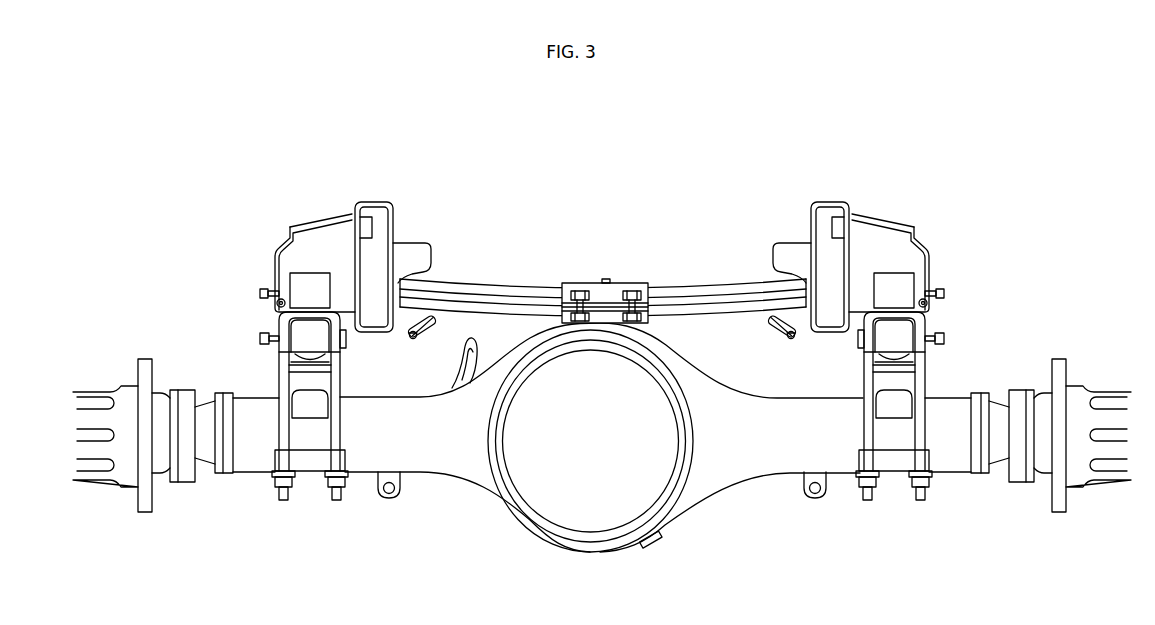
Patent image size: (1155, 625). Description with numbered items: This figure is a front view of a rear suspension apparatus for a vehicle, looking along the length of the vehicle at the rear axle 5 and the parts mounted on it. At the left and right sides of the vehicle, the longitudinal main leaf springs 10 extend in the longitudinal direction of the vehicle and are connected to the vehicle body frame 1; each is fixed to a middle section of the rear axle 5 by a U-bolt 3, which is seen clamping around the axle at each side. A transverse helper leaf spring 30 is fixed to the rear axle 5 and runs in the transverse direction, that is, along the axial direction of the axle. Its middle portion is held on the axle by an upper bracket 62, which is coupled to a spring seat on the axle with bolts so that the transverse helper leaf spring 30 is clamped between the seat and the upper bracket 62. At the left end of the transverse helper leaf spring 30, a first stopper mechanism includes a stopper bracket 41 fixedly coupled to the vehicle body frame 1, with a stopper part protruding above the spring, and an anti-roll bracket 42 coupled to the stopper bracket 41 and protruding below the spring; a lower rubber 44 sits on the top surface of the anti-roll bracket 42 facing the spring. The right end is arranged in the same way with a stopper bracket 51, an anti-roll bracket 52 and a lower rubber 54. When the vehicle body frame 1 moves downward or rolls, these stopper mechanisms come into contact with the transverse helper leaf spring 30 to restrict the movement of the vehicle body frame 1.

The vehicle body frame 1 is at (375, 202).
The U-bolt 3 is at (283, 432).
The rear axle 5 is at (600, 502).
The longitudinal main leaf spring 10 is at (297, 383).
The transverse helper leaf spring 30 is at (532, 285).
The stopper bracket 41 is at (408, 255).
The anti-roll bracket 42 is at (422, 342).
The lower rubber 44 is at (425, 340).
The stopper bracket 51 is at (800, 253).
The anti-roll bracket 52 is at (772, 340).
The lower rubber 54 is at (785, 317).
The upper bracket 62 is at (618, 283).